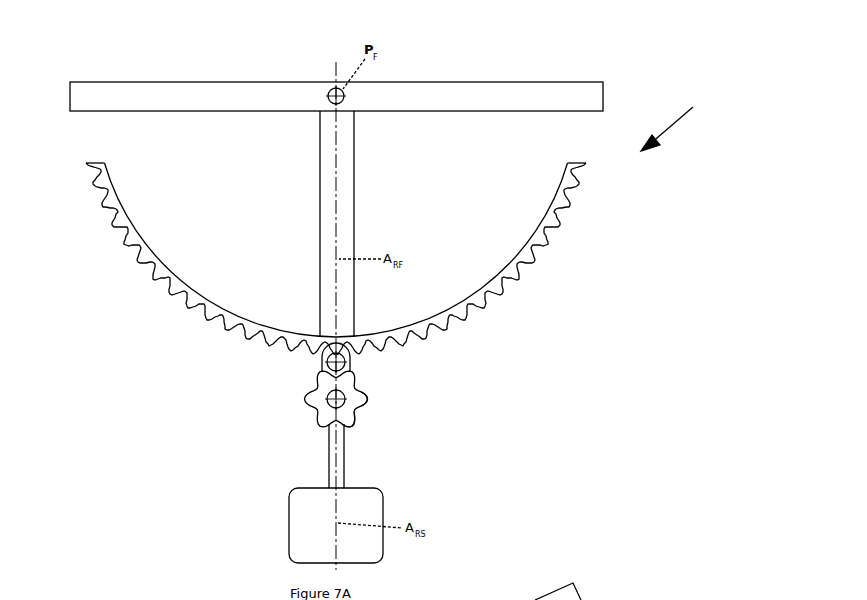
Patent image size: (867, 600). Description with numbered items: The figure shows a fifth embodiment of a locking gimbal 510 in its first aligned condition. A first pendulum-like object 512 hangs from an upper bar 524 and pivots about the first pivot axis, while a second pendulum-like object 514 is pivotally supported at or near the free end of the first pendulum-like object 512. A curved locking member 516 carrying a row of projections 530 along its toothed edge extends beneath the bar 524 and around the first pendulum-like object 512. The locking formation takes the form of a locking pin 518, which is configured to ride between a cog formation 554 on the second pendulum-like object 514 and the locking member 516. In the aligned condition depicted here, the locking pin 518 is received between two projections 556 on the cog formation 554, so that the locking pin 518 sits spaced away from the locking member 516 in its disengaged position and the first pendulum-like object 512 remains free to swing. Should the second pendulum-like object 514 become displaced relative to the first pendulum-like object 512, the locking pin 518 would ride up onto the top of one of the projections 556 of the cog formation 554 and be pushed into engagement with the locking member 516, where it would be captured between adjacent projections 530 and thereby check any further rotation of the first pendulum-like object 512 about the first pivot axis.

The steering assembly 510 is at (681, 124).
The first pendulum-like object 512 is at (322, 201).
The second pendulum-like object 514 is at (330, 455).
The locking member 516 is at (527, 249).
The locking pin 518 is at (346, 362).
The rudder bar 524 is at (486, 88).
The projections on the locking member 530 is at (499, 295).
The cog formation 554 is at (320, 402).
The projections on the cog formation 556 is at (357, 386).